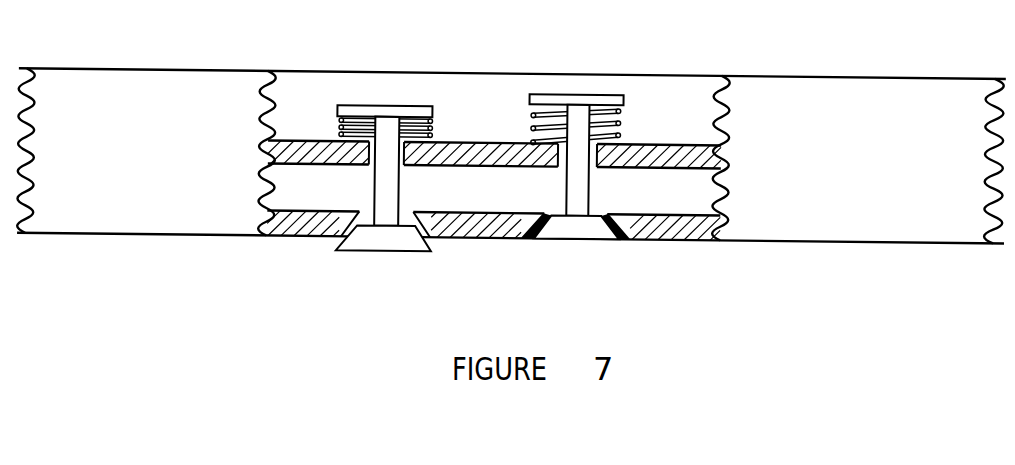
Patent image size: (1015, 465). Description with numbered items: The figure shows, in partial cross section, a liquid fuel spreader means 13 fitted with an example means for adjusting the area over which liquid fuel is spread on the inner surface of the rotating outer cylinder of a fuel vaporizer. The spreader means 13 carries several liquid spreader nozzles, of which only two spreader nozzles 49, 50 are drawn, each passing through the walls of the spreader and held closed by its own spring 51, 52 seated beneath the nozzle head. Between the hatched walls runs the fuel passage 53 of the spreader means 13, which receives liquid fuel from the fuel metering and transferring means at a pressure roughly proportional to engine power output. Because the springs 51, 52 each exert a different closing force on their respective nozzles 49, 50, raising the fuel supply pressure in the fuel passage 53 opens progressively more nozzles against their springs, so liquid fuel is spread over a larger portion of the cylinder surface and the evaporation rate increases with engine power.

The liquid spreader means 13 is at (775, 77).
The liquid spreader nozzle 49 is at (387, 243).
The liquid spreader nozzle 50 is at (582, 230).
The spring 51 is at (333, 123).
The spring 52 is at (528, 123).
The fuel passage 53 is at (297, 185).